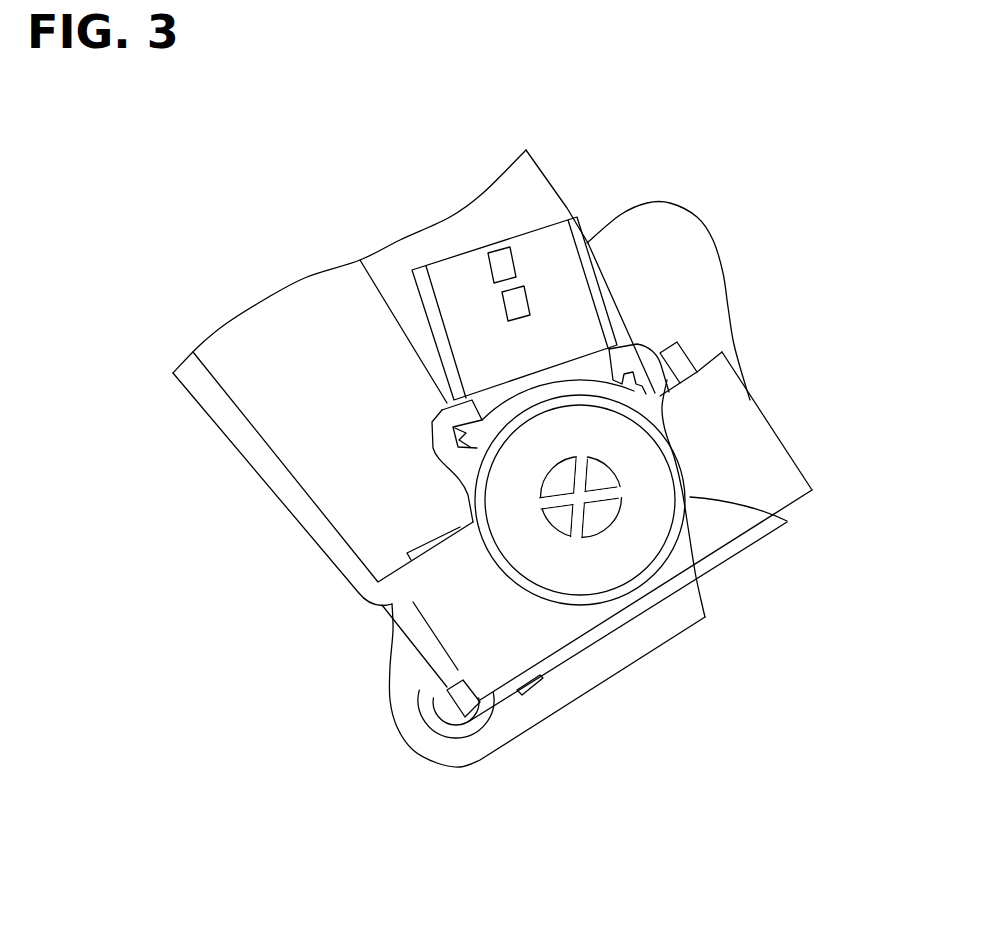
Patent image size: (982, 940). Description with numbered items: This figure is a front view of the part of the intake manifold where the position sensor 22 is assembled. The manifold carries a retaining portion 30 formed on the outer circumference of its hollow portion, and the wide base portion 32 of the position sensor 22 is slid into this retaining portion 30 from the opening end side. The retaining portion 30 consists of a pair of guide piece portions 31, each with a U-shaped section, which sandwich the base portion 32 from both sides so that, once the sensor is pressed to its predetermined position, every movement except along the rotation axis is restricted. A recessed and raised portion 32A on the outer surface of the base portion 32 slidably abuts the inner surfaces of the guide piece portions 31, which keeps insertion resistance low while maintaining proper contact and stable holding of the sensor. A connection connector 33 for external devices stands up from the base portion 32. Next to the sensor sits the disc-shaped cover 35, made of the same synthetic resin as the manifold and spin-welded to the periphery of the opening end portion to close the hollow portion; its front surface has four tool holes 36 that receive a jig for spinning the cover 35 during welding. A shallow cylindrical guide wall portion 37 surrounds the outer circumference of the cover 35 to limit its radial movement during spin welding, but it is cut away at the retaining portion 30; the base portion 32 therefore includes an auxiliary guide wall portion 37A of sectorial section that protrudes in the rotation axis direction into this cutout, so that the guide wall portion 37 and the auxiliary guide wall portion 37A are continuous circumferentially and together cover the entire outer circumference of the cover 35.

The position sensor 22 is at (540, 225).
The retaining portion 30 is at (627, 358).
The guide piece portions 31 is at (657, 377).
The base portion 32 is at (443, 448).
The recessed and raised portion 32A is at (442, 410).
The connection connector 33 is at (457, 280).
The cover 35 is at (628, 560).
The tool holes 36 is at (615, 463).
The guide wall portion 37 is at (784, 510).
The auxiliary guide wall portion 37A is at (636, 398).